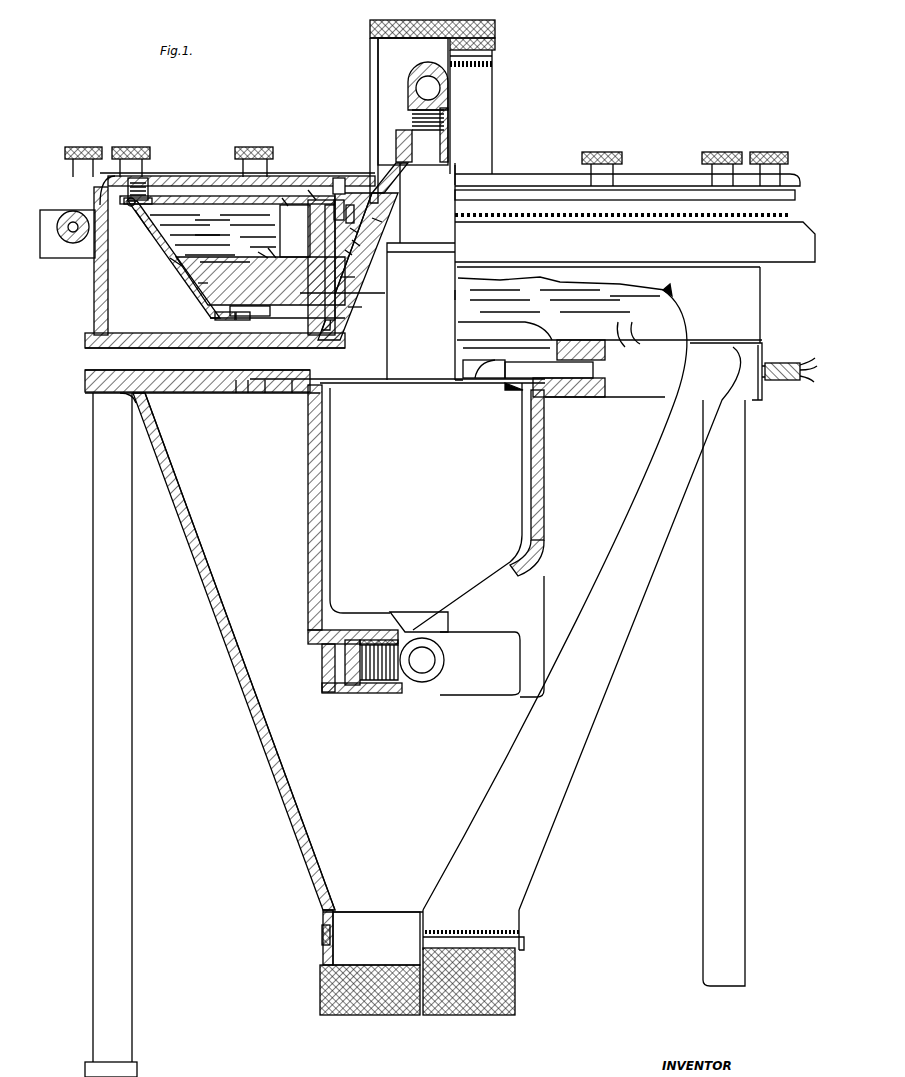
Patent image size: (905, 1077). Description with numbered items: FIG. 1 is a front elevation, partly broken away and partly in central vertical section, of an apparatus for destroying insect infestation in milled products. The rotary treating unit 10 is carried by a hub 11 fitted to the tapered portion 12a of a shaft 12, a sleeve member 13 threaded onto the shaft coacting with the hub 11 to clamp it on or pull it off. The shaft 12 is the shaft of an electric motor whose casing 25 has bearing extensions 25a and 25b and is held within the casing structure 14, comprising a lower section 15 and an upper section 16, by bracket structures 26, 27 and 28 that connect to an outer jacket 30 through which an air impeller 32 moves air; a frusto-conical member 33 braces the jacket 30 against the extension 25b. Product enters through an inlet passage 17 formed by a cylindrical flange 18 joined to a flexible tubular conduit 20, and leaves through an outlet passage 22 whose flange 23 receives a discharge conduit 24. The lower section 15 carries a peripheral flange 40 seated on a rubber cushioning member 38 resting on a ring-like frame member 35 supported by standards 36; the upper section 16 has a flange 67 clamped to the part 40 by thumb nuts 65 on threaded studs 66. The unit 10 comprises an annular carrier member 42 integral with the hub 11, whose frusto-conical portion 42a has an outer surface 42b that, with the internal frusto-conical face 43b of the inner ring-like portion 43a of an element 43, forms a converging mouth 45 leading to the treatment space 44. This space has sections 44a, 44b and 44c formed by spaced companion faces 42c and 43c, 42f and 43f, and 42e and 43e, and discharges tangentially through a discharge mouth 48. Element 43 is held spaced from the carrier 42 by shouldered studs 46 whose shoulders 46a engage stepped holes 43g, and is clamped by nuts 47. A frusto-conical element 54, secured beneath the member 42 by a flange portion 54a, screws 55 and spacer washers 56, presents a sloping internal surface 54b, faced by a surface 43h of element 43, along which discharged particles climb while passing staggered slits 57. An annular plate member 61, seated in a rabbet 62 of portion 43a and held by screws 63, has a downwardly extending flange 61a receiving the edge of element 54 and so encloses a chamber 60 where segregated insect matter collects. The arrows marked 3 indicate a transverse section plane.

The rotary treating unit 10 is at (204, 293).
The hub 11 is at (394, 164).
The shaft 12 is at (455, 242).
The tapered portion 12a is at (447, 175).
The sleeve member 13 is at (402, 90).
The casing structure 14 is at (198, 576).
The lower casing section 15 is at (243, 698).
The upper casing section 16 is at (551, 174).
The inlet passage 17 is at (371, 68).
The cylindrical flange 18 is at (496, 114).
The tubular conduit 20 is at (497, 34).
The outlet passage 22 is at (350, 940).
The flange 23 is at (326, 926).
The conduit 24 is at (436, 1015).
The motor casing 25 is at (397, 538).
The bearing extension 25a is at (400, 612).
The bearing extension 25b is at (427, 292).
The bracket structure 26 is at (213, 395).
The bracket structure 27 is at (640, 396).
The bracket structures 28 is at (426, 690).
The outer jacket 30 is at (308, 548).
The air impeller 32 is at (365, 682).
The frusto-conical member 33 is at (350, 307).
The ring-like frame member 35 is at (790, 268).
The standards 36 is at (703, 816).
The cushioning member 38 is at (797, 222).
The peripheral flange 40 is at (648, 200).
The carrier member 42 is at (340, 316).
The frusto-conical portion 42a is at (347, 277).
The outer surface 42b is at (350, 252).
The frusto-conical face 42c is at (266, 395).
The frusto-conical face 42e is at (236, 395).
The face 42f is at (248, 395).
The element 43 is at (203, 244).
The inner ring-like portion 43a is at (310, 190).
The internal frusto-conical face 43b is at (376, 214).
The frusto-conical face 43c is at (285, 198).
The frusto-conical face 43e is at (214, 313).
The face 43f is at (262, 257).
The stepped holes 43g is at (338, 200).
The face 43h is at (172, 260).
The treatment space 44 is at (228, 306).
The treatment space section 44a is at (292, 395).
The connecting section 44b is at (274, 256).
The treatment space section 44c is at (200, 283).
The mouth 45 is at (358, 243).
The studs 46 is at (355, 230).
The shoulders 46a is at (350, 205).
The nuts 47 is at (335, 180).
The discharge mouth 48 is at (236, 316).
The frusto-conical element 54 is at (672, 291).
The flange portion 54a is at (215, 320).
The internal surface 54b is at (146, 230).
The screws 55 is at (626, 333).
The washers 56 is at (215, 359).
The slits 57 is at (162, 218).
The chamber 60 is at (146, 210).
The annular plate member 61 is at (132, 196).
The downwardly extending flange 61a is at (130, 208).
The rabbet 62 is at (295, 231).
The screws 63 is at (310, 245).
The thumb nuts 65 is at (600, 152).
The threaded studs 66 is at (124, 192).
The flange 67 is at (627, 192).
The section line 3 is at (787, 322).